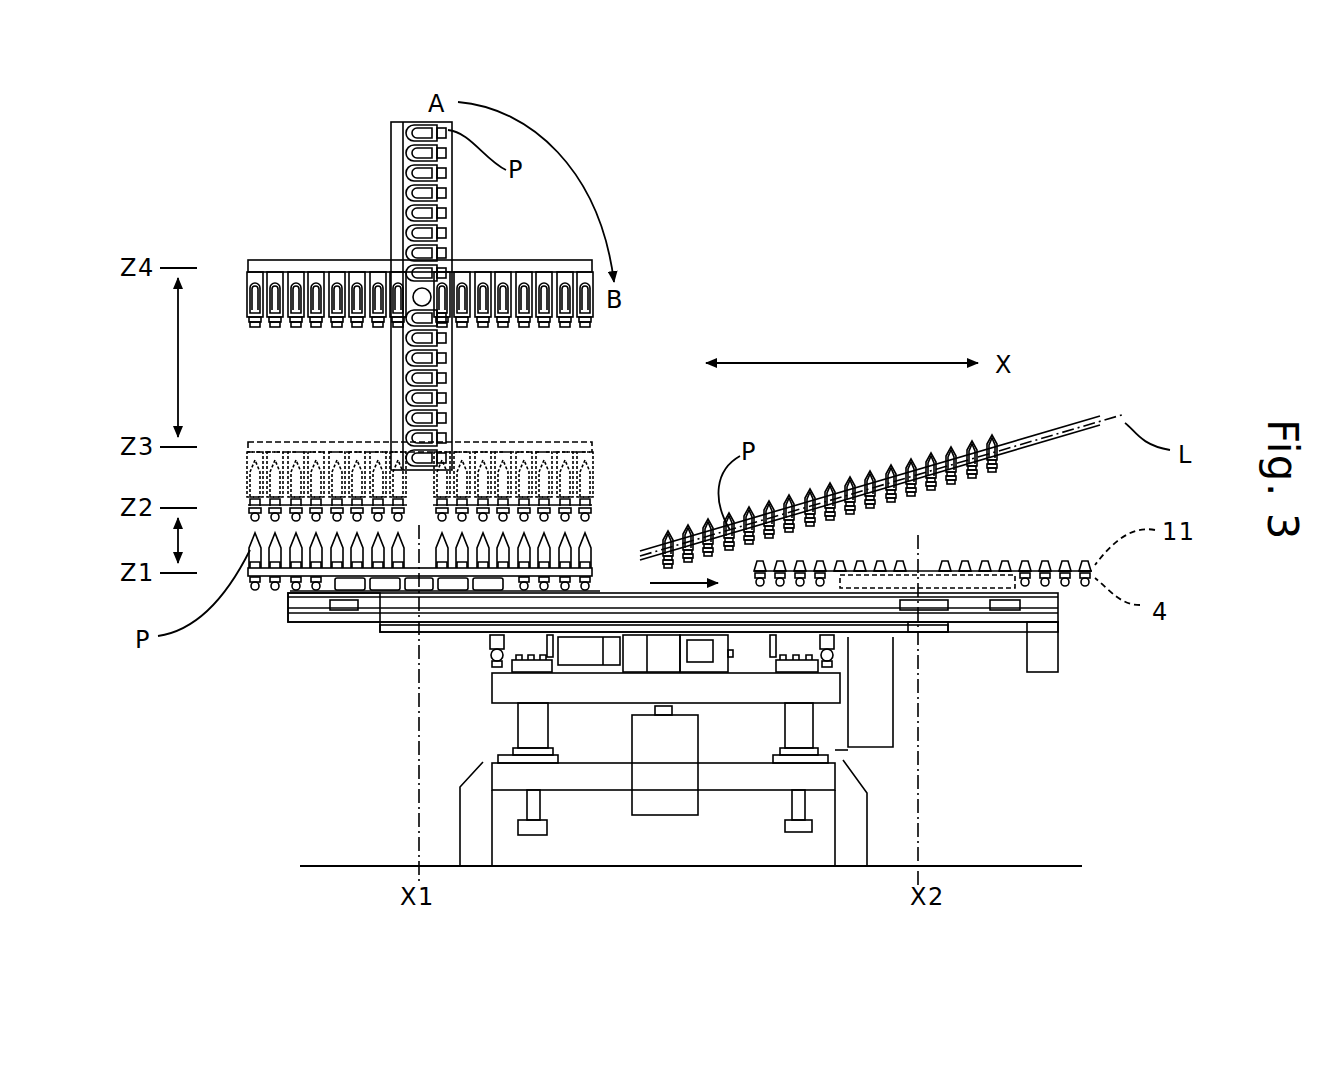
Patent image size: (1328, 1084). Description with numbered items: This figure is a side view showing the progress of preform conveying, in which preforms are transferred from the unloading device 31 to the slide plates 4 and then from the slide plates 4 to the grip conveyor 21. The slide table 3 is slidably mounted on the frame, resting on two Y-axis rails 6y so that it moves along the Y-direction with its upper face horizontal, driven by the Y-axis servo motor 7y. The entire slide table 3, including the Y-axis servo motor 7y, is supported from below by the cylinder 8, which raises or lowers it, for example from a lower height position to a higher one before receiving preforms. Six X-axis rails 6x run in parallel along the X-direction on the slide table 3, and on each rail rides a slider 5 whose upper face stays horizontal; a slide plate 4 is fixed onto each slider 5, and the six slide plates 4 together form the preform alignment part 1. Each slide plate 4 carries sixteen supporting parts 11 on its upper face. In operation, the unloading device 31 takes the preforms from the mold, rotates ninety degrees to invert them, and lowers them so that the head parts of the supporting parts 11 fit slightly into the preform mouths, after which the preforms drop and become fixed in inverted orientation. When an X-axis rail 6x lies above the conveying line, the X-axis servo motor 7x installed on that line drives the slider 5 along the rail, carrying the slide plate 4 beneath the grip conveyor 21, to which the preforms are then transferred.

The preform alignment part 1 is at (625, 504).
The slide table 3 is at (435, 640).
The slide plate 4 is at (290, 584).
The slider 5 is at (408, 588).
The X-axis rail 6x is at (308, 620).
The Y-axis rail 6y is at (492, 652).
The X-axis servo motor 7x is at (1040, 648).
The Y-axis servo motor 7y is at (612, 648).
The cylinder 8 is at (660, 745).
The supporting part 11 is at (265, 580).
The grip conveyor 21 is at (1024, 467).
The unloading device 31 is at (358, 211).